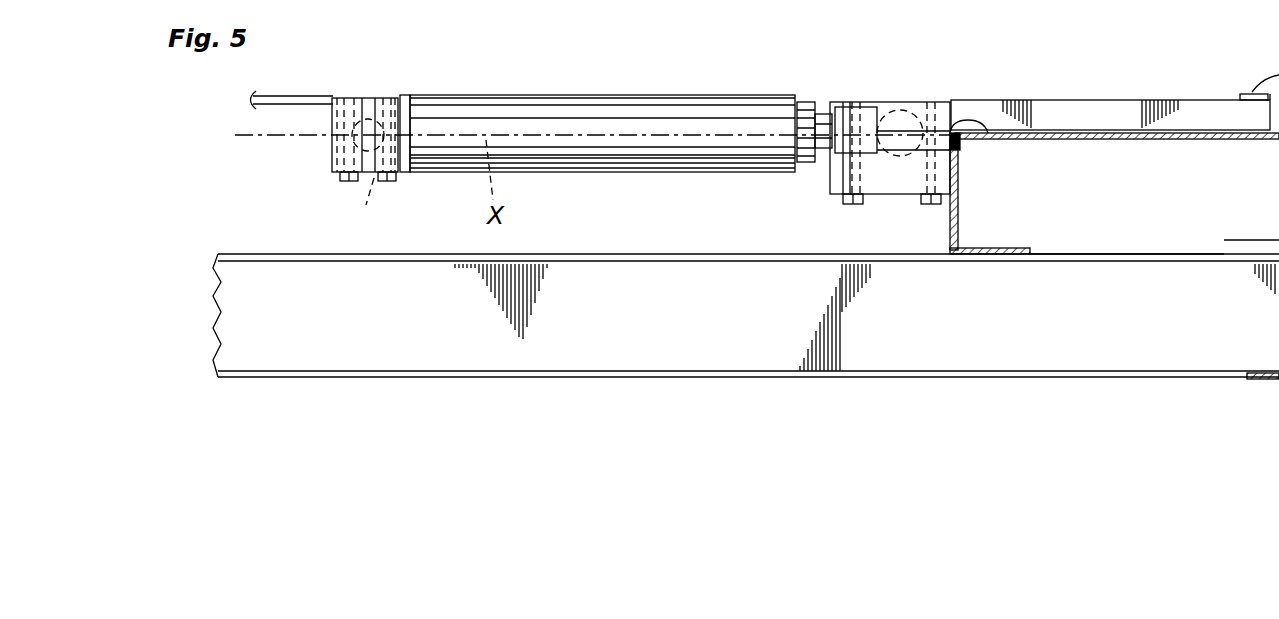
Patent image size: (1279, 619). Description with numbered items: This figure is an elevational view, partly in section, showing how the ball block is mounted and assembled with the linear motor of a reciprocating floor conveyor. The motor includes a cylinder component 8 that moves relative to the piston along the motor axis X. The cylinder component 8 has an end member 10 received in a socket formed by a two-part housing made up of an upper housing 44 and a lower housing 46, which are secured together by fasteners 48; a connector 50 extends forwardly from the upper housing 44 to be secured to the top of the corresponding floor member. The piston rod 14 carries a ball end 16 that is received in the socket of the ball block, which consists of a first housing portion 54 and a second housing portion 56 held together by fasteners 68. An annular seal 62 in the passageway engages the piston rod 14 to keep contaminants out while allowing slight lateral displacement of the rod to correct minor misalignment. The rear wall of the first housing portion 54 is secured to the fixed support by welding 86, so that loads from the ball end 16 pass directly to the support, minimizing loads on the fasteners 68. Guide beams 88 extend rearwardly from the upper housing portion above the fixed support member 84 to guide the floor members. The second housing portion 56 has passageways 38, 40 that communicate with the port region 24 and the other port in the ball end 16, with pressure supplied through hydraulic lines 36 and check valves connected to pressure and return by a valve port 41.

The cylinder component 8 is at (590, 108).
The end member 10 is at (381, 207).
The piston rod 14 is at (822, 115).
The ball end 16 is at (905, 122).
The port region 24 is at (1190, 0).
The hydraulic lines 36 is at (1095, 40).
The passageway 38 is at (1150, 0).
The passageway 40 is at (1220, 0).
The valve port 41 is at (1275, 0).
The upper housing 44 is at (372, 100).
The lower housing 46 is at (333, 160).
The fasteners 48 is at (386, 181).
The connector 50 is at (290, 104).
The first housing portion 54 is at (870, 102).
The second housing portion 56 is at (836, 180).
The annular seal 62 is at (835, 150).
The fasteners 68 is at (923, 196).
The fixed support member 84 is at (1210, 140).
The welding 86 is at (988, 139).
The guide beams 88 is at (1030, 110).